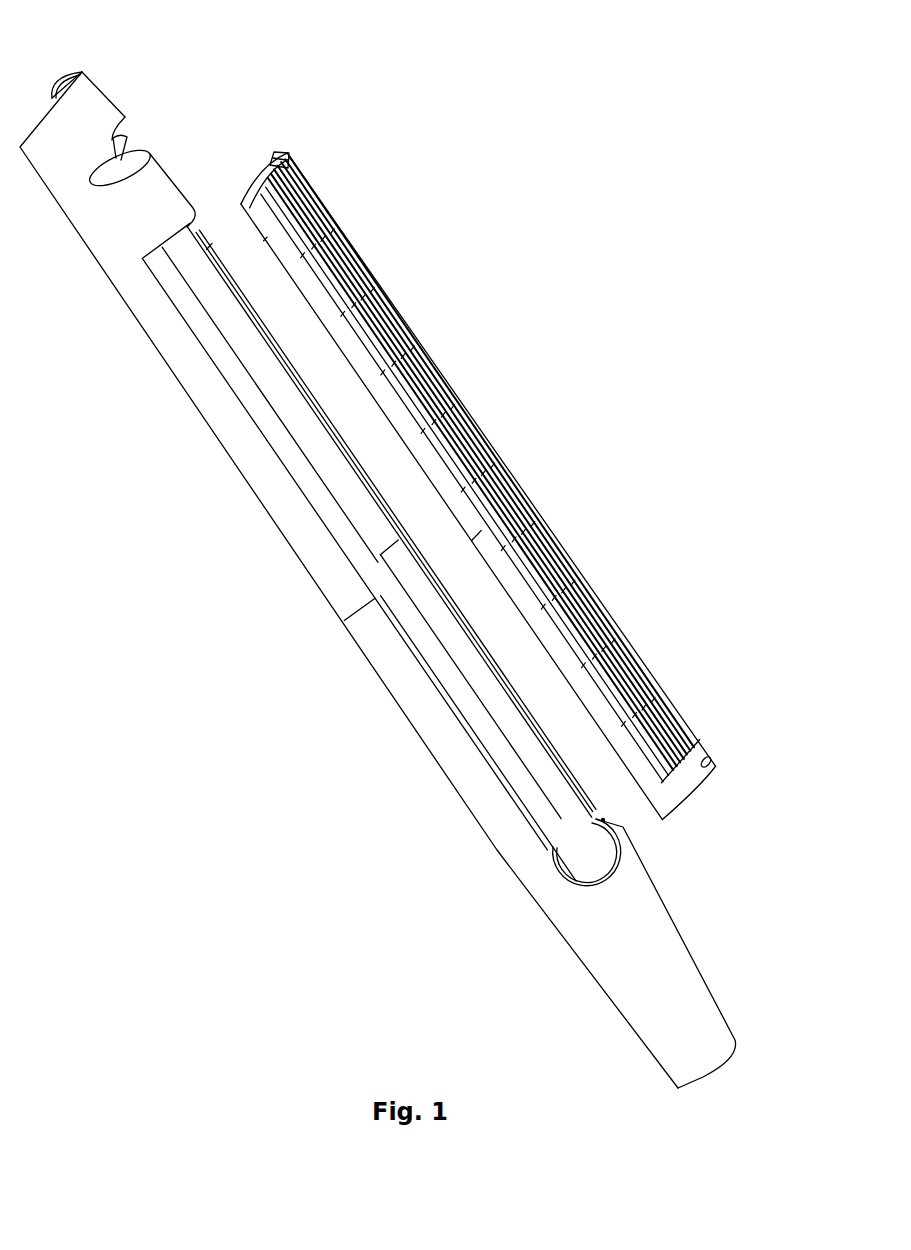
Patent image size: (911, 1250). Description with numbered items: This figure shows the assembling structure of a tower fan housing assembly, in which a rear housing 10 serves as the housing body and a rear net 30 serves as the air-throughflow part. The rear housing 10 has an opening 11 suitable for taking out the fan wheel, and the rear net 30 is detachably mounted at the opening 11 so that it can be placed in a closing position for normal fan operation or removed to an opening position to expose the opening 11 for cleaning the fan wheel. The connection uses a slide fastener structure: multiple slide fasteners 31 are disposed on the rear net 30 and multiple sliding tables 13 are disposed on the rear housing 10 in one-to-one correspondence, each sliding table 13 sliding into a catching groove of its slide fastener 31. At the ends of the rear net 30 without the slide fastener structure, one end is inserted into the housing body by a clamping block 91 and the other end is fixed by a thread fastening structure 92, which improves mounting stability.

The rear housing 10 is at (68, 72).
The opening 11 is at (227, 343).
The sliding table 13 is at (205, 248).
The rear net 30 is at (395, 205).
The slide fastener 31 is at (262, 243).
The clamping block 91 is at (272, 152).
The thread fastening structure 92 is at (712, 762).